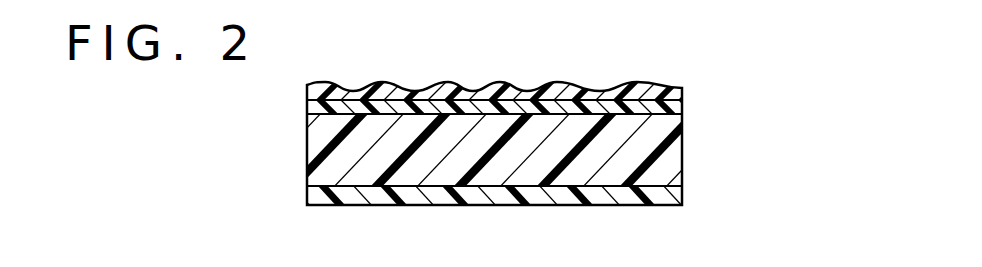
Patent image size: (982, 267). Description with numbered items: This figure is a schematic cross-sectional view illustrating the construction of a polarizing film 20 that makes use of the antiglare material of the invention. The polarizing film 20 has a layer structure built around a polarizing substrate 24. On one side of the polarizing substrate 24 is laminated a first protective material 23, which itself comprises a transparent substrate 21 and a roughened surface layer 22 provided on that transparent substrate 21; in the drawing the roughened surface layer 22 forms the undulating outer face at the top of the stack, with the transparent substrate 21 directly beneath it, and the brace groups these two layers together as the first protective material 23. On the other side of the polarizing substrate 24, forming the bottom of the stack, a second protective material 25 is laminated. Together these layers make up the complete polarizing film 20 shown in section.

The polarizing film 20 is at (525, 133).
The transparent substrate 21 is at (577, 97).
The roughened surface layer 22 is at (448, 87).
The first protective material 23 is at (536, 62).
The polarizing substrate 24 is at (605, 148).
The second protective material 25 is at (663, 195).